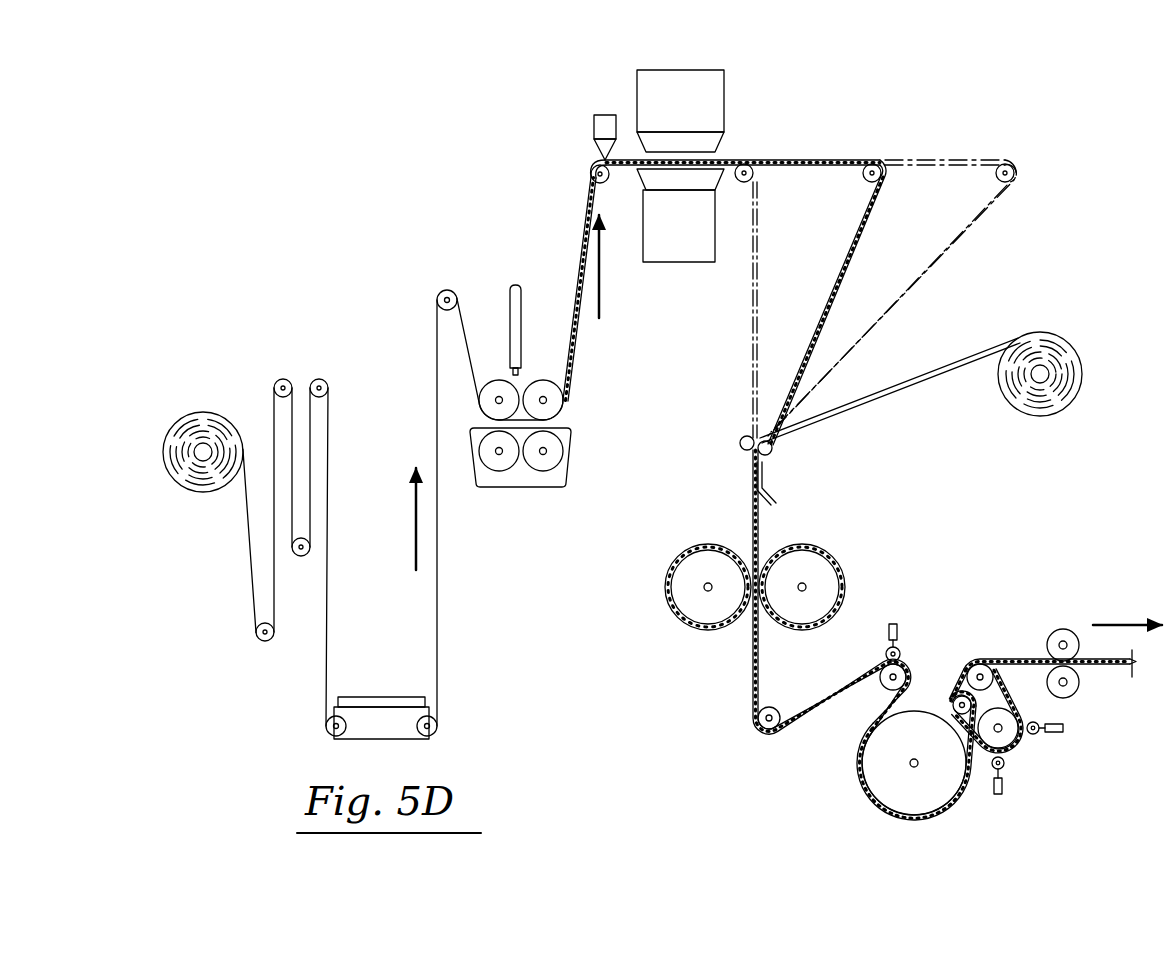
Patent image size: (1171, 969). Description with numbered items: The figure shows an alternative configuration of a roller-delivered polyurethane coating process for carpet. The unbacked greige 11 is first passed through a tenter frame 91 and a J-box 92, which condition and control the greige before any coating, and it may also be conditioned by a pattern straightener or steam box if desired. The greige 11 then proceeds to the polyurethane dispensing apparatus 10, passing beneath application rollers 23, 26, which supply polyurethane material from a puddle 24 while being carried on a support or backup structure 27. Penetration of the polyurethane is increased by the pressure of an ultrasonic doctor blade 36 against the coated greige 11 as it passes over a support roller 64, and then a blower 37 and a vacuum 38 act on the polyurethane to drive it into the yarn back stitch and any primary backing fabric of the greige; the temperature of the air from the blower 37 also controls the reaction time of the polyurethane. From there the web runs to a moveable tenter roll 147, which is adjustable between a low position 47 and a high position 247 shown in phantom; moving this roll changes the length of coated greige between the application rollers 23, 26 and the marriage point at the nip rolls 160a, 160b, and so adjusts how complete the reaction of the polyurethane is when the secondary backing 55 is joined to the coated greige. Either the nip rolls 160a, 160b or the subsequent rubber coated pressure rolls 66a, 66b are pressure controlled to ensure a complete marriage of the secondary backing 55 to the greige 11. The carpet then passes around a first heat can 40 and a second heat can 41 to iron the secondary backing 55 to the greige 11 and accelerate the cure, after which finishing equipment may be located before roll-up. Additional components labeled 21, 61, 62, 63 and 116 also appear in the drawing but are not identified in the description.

The polyurethane dispensing apparatus 10 is at (593, 455).
The greige 11 is at (238, 412).
The applicator 21 is at (515, 285).
The application roller 23 is at (487, 392).
The puddle 24 is at (523, 385).
The application roller 26 is at (560, 412).
The support or backup structure 27 is at (514, 496).
The ultrasonic doctor blade 36 is at (598, 126).
The blower 37 is at (668, 113).
The vacuum 38 is at (658, 247).
The first heat can 40 is at (873, 810).
The second heat can 41 is at (1018, 752).
The low position 47 is at (755, 162).
The secondary backing 55 is at (1020, 345).
The roller 61 is at (878, 707).
The roller 62 is at (982, 672).
The roller 63 is at (958, 697).
The support roller 64 is at (593, 178).
The rubber coated pressure roll 66a is at (842, 565).
The rubber coated pressure roll 66b is at (693, 622).
The tenter frame 91 is at (300, 362).
The J-box 92 is at (360, 680).
The conveyor 116 is at (444, 290).
The moveable tenter roll 147 is at (878, 165).
The nip roll 160a is at (773, 452).
The nip roll 160b is at (740, 443).
The high position 247 is at (1000, 176).